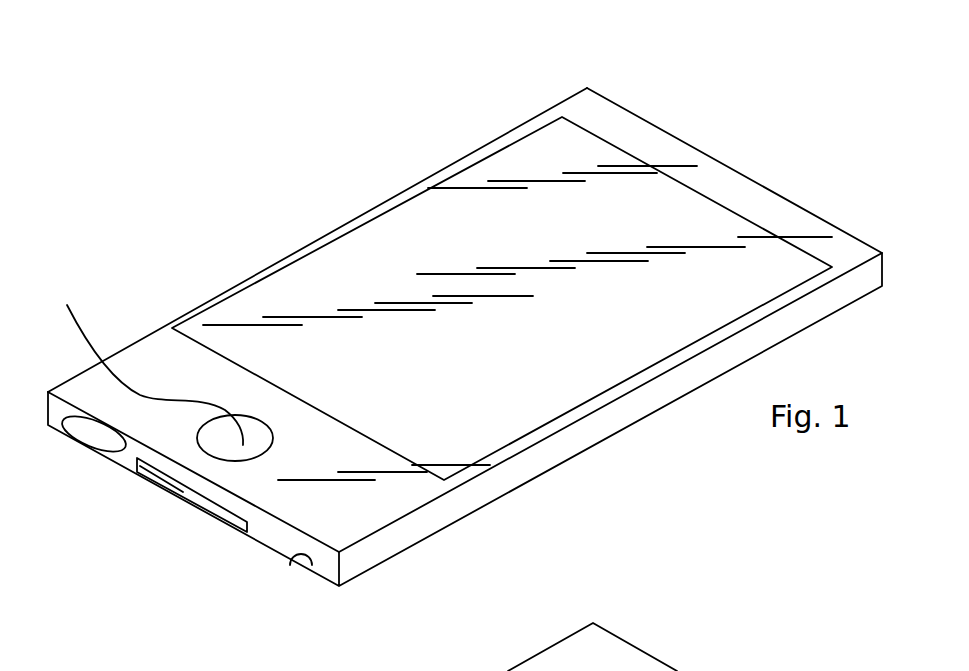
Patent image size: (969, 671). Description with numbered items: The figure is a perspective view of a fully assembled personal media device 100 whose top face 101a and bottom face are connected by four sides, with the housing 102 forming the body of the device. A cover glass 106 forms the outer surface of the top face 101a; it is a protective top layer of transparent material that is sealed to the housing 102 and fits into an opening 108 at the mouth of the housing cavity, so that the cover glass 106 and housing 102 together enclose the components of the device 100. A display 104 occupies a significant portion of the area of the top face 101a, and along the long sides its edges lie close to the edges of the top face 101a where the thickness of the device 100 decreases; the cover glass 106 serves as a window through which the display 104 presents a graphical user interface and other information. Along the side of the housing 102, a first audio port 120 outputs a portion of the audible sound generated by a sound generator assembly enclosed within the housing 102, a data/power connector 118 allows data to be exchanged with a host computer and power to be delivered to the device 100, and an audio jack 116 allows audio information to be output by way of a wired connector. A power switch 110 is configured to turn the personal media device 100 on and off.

The personal media device 100 is at (176, 80).
The top face 101a is at (167, 345).
The housing 102 is at (613, 417).
The display 104 is at (633, 207).
The cover glass 106 is at (375, 260).
The opening 108 is at (602, 128).
The power switch 110 is at (837, 670).
The audio jack 116 is at (294, 558).
The data/power connector 118 is at (173, 490).
The first audio port 120 is at (90, 430).